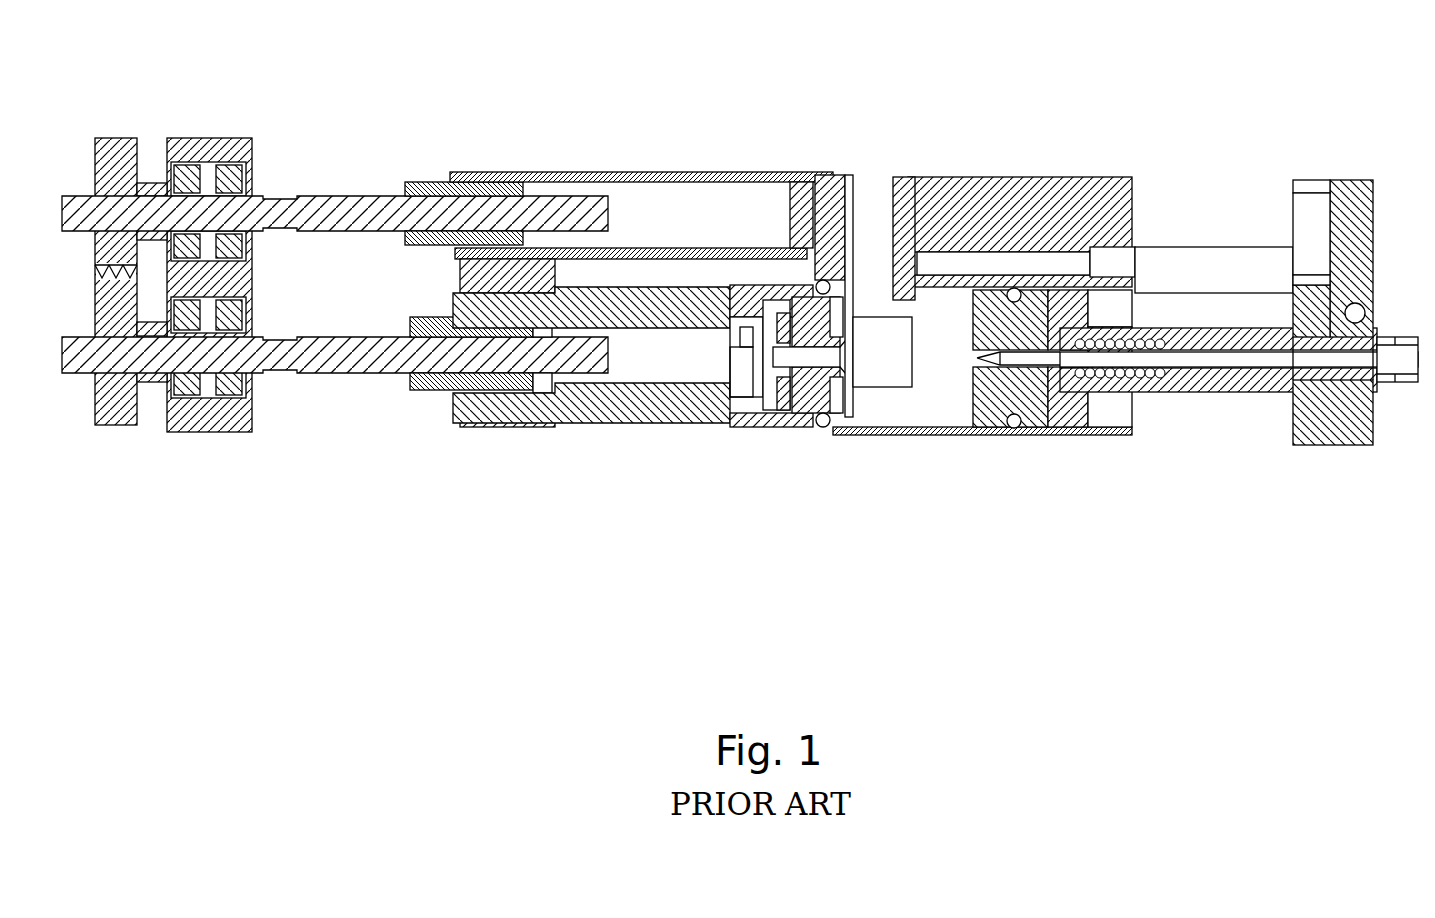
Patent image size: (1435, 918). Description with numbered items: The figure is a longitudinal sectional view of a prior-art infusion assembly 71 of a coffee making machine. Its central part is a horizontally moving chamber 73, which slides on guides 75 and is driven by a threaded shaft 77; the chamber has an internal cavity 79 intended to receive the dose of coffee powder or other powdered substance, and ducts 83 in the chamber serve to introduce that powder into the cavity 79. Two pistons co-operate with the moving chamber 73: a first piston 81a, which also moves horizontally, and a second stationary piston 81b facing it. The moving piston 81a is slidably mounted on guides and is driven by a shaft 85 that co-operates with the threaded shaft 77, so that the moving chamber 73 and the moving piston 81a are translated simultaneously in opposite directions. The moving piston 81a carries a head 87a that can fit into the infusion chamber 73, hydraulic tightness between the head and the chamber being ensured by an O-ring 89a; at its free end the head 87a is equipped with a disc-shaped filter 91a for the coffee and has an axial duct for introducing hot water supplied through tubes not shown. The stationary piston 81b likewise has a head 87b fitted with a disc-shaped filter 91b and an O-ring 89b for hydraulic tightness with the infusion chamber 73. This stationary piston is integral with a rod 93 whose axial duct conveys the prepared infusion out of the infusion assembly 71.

The infusion assembly 71 is at (1032, 155).
The horizontally moving chamber 73 is at (932, 175).
The guides 75 is at (1230, 247).
The threaded shaft 77 is at (313, 196).
The internal cavity 79 is at (950, 410).
The first piston 81a is at (753, 437).
The second stationary piston 81b is at (1143, 420).
The ducts 83 is at (893, 357).
The shaft 85 is at (327, 373).
The head 87a is at (755, 290).
The head 87b is at (1038, 405).
The O-ring 89a is at (822, 428).
The O-ring 89b is at (1012, 428).
The disc-shaped filter 91a is at (872, 300).
The disc-shaped filter 91b is at (968, 315).
The rod 93 is at (1235, 395).